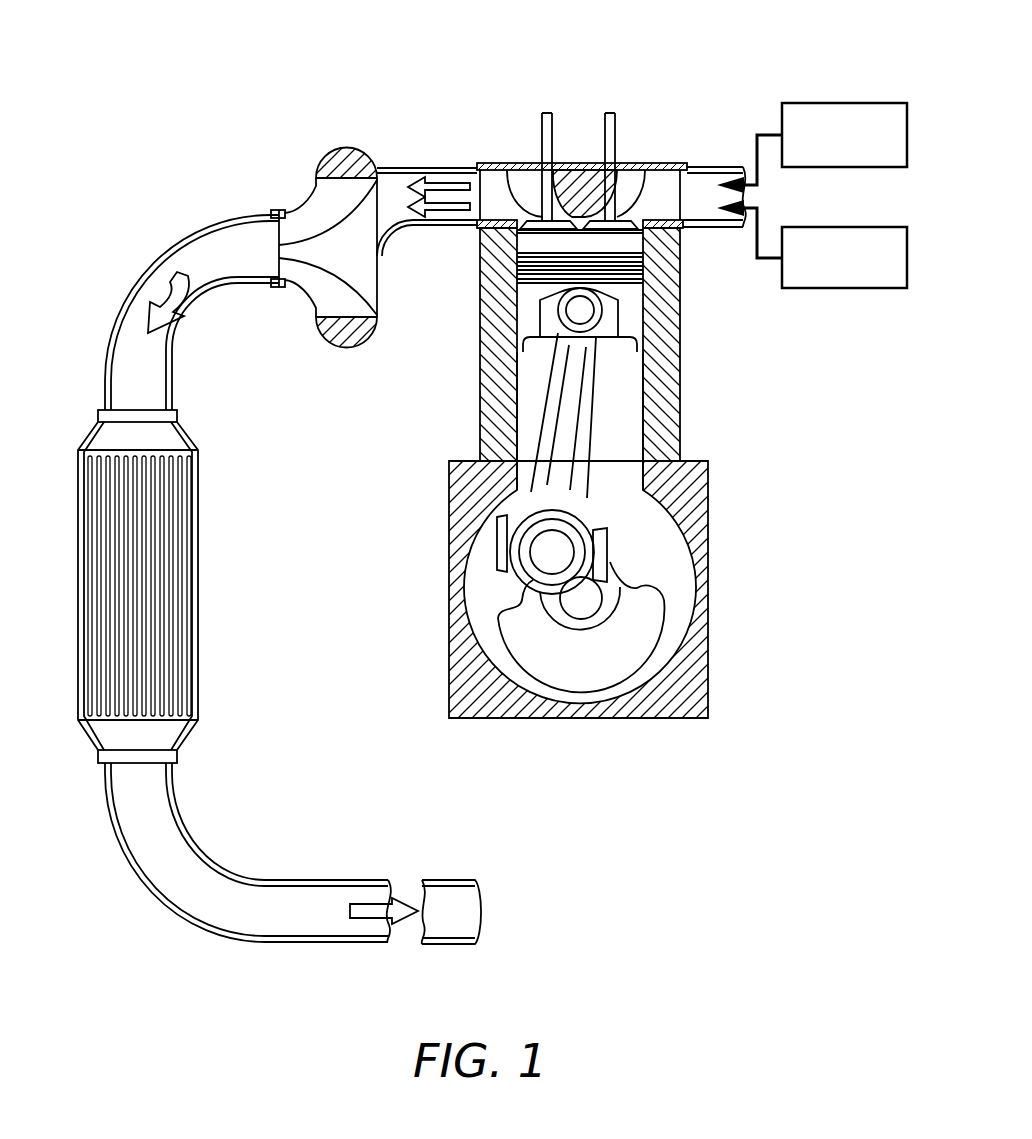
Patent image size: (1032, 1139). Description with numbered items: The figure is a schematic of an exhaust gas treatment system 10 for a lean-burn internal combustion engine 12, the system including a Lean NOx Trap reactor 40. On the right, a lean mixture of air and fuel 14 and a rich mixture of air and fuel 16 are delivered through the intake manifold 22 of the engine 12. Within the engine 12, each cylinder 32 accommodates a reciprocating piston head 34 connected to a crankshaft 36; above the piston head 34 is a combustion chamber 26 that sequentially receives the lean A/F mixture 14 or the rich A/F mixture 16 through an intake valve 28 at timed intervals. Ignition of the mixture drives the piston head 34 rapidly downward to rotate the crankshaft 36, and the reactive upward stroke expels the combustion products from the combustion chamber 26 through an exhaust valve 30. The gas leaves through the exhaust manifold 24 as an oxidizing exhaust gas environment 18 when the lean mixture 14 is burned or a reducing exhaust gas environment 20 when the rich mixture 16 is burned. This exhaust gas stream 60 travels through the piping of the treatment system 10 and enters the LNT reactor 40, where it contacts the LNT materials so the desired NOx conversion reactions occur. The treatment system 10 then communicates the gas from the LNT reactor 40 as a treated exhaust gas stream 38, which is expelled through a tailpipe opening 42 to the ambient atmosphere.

The exhaust gas treatment system 10 is at (135, 216).
The internal combustion engine 12 is at (680, 320).
The lean mixture of air and fuel 14 is at (827, 103).
The rich mixture of air and fuel 16 is at (822, 289).
The oxidizing exhaust gas environment 18 is at (438, 186).
The reducing exhaust gas environment 20 is at (437, 228).
The intake manifold 22 is at (713, 165).
The exhaust manifold 24 is at (465, 163).
The combustion chamber 26 is at (646, 245).
The intake valve 28 is at (614, 207).
The exhaust valve 30 is at (540, 208).
The cylinder 32 is at (640, 419).
The piston head 34 is at (527, 318).
The crankshaft 36 is at (553, 552).
The treated exhaust gas stream 38 is at (360, 922).
The Lean NOx Trap (LNT) reactor 40 is at (70, 545).
The tailpipe opening 42 is at (478, 910).
The exhaust gas stream 60 is at (157, 300).